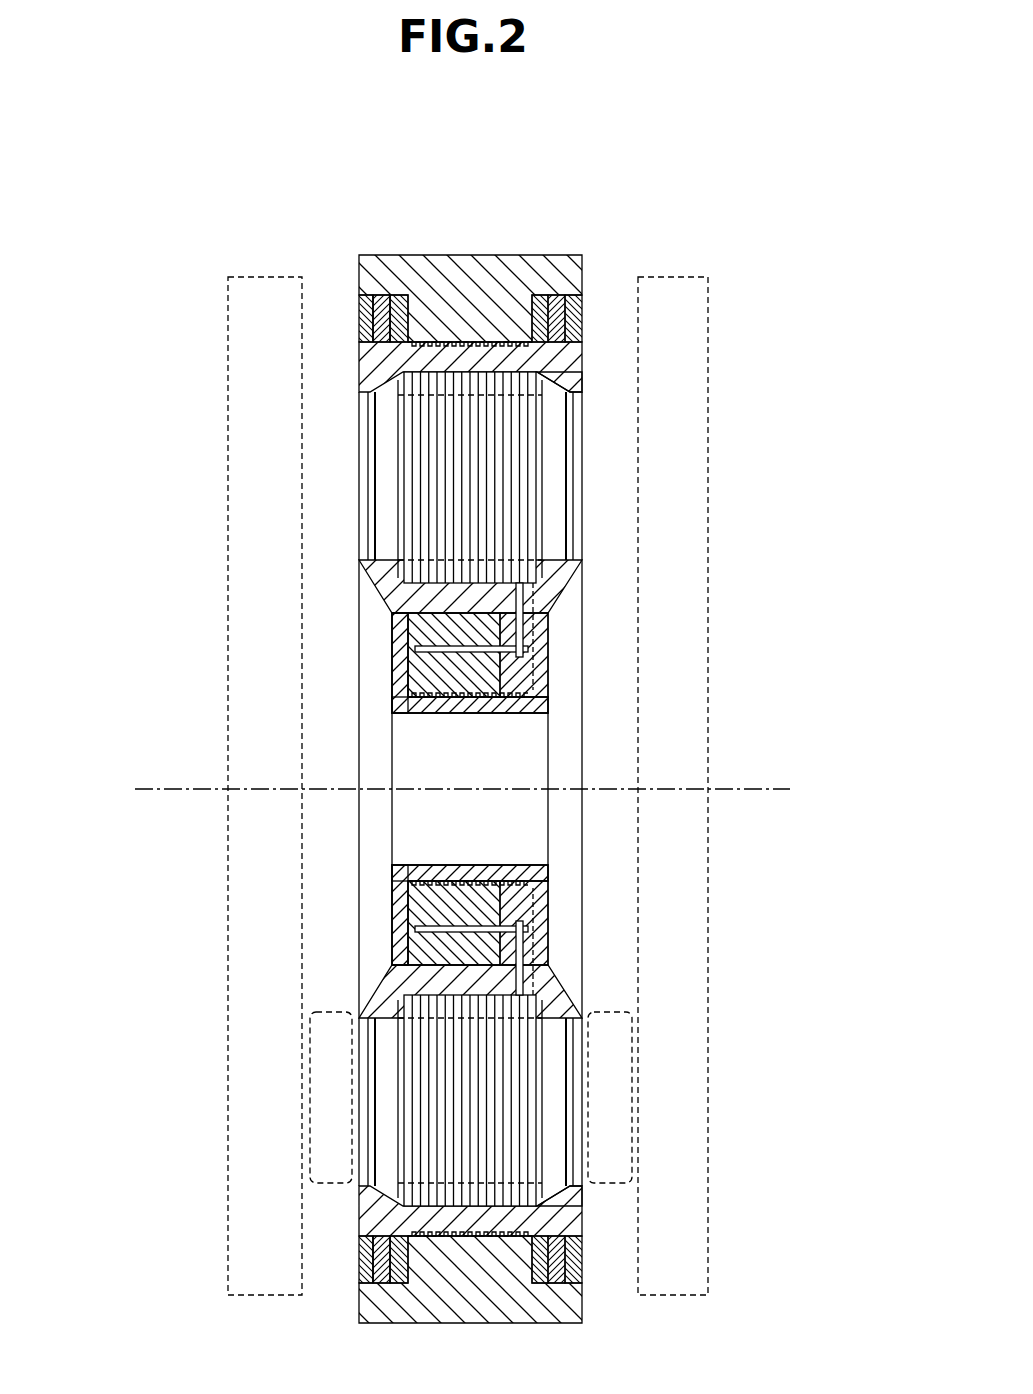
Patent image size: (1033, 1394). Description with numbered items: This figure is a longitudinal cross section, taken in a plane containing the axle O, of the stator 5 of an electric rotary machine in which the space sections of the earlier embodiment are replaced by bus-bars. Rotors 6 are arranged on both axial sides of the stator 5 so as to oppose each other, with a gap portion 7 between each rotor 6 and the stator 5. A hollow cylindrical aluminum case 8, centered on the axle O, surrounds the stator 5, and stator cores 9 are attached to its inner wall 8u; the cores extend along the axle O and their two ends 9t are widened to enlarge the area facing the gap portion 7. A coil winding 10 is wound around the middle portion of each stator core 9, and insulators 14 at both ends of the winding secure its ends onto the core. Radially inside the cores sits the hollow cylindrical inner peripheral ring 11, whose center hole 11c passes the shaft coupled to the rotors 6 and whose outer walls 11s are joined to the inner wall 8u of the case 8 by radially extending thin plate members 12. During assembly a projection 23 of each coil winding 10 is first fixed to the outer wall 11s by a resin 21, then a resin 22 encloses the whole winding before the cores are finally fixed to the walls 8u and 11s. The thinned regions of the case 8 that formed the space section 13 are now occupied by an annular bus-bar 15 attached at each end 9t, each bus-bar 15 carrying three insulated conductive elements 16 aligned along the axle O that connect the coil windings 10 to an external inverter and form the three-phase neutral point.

The stator 5 is at (470, 726).
The rotor 6 is at (258, 277).
The gap portion 7 is at (330, 1183).
The case 8 is at (452, 256).
The inner wall 8u is at (505, 352).
The stator core 9 is at (372, 378).
The end of stator core 9t is at (372, 568).
The coil winding 10 is at (433, 492).
The inner peripheral ring 11 is at (393, 655).
The outer wall 11s is at (396, 683).
The center hole 11c is at (490, 704).
The thin plate member 12 is at (392, 598).
The space section 13 is at (600, 300).
The insulator 14 is at (397, 418).
The bus-bar 15 is at (360, 302).
The element 16 is at (397, 300).
The resin 21 is at (547, 663).
The resin 22 is at (563, 380).
The projection 23 is at (445, 698).
The axle O is at (479, 790).